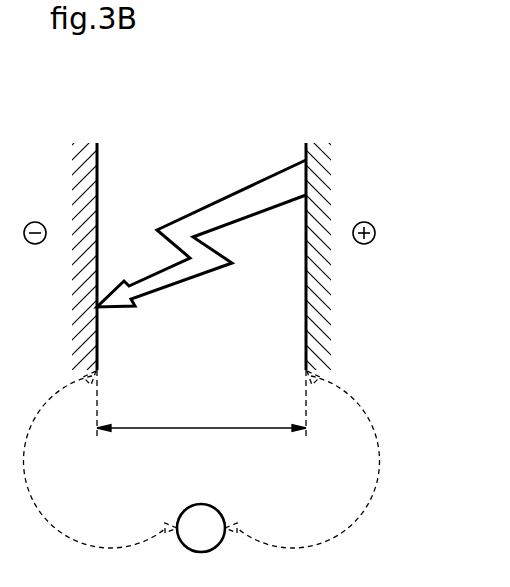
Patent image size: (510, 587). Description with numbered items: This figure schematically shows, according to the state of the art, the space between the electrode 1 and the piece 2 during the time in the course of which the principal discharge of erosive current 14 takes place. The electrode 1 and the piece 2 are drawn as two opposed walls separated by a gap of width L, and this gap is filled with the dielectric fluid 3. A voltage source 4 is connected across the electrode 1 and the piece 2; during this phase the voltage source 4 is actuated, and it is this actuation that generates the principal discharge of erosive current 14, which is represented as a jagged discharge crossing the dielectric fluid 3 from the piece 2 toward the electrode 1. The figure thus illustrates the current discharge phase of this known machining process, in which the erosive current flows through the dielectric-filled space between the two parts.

The electrode 1 is at (97, 162).
The piece 2 is at (307, 169).
The dielectric fluid 3 is at (208, 146).
The voltage source 4 is at (201, 461).
The principal discharge of erosive current 14 is at (202, 262).